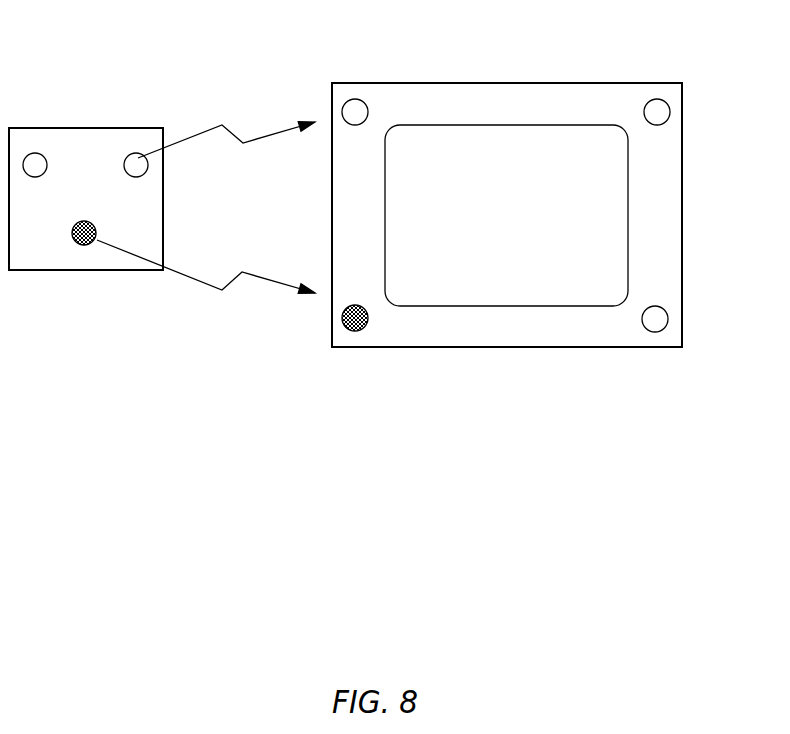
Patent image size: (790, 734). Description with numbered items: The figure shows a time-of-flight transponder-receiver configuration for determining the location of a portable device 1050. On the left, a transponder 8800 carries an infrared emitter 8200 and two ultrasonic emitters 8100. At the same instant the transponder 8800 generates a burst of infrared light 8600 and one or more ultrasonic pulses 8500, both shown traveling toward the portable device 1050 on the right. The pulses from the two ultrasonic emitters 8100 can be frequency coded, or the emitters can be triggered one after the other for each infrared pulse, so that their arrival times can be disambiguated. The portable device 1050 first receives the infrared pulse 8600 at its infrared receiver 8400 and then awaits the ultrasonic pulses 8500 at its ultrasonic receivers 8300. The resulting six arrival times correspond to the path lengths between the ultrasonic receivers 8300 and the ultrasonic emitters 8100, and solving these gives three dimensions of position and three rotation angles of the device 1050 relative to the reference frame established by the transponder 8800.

The transponder 8800 is at (148, 133).
The ultrasonic emitters 8100 is at (136, 153).
The infrared emitter 8200 is at (79, 245).
The ultrasonic pulses 8500 is at (203, 137).
The infrared pulse 8600 is at (228, 253).
The portable device 1050 is at (610, 335).
The ultrasonic receivers 8300 is at (657, 100).
The infrared receiver 8400 is at (350, 331).